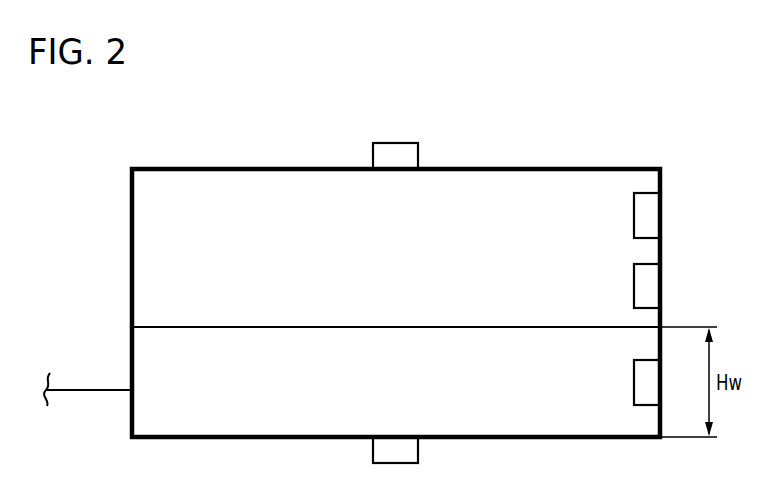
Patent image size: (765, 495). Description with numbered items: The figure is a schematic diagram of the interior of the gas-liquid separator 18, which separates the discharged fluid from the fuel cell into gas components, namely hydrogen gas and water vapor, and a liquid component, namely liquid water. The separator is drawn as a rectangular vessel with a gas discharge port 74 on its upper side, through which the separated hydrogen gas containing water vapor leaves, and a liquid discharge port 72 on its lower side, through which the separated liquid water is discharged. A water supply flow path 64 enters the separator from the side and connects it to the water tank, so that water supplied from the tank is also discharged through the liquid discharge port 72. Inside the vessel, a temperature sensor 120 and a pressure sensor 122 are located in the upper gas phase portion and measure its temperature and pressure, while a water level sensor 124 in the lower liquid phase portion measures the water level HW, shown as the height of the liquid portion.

The gas-liquid separator 18 is at (176, 167).
The gas discharge port 74 is at (395, 142).
The liquid discharge port 72 is at (372, 450).
The temperature sensor 120 is at (633, 210).
The pressure sensor 122 is at (633, 280).
The water level sensor 124 is at (633, 376).
The water supply flow path 64 is at (81, 387).